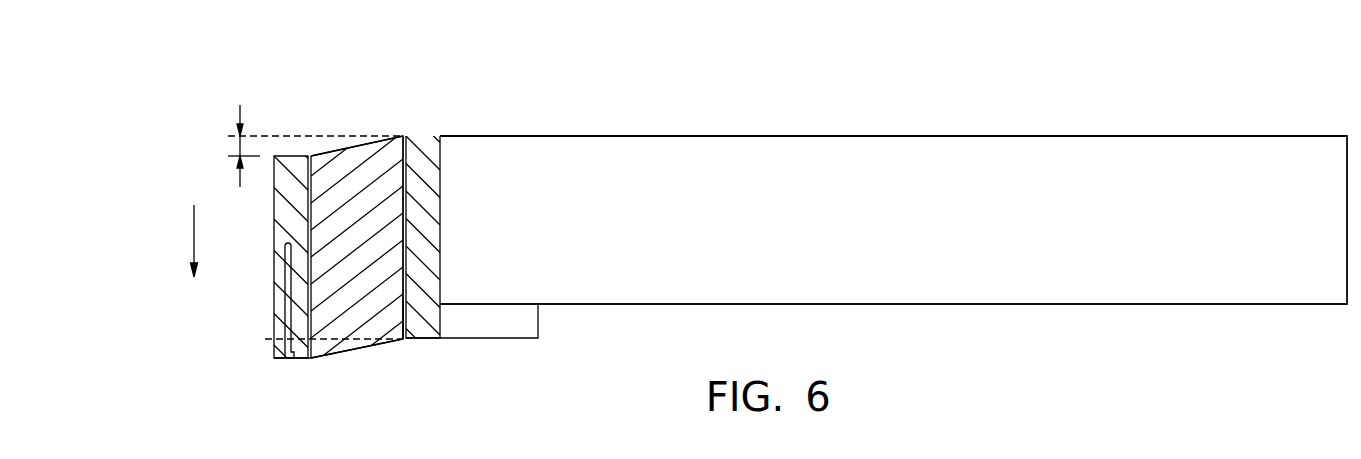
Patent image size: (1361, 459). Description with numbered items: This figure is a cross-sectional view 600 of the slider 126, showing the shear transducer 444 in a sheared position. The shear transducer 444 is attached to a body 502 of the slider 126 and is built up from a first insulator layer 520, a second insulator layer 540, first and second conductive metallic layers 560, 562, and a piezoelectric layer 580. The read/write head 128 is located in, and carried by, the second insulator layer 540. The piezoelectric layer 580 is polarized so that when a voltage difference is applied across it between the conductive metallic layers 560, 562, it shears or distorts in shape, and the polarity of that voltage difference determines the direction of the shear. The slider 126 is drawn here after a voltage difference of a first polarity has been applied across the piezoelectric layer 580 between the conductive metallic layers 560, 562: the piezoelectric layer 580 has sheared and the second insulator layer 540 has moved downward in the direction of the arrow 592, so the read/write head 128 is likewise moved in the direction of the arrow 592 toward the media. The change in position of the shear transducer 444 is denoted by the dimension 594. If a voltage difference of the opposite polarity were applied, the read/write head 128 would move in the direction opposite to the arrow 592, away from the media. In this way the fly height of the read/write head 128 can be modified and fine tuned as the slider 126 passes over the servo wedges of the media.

The slider 126 is at (565, 136).
The read/write head 128 is at (288, 360).
The shear transducer 444 is at (345, 93).
The body 502 is at (815, 239).
The first insulator layer 520 is at (420, 340).
The second insulator layer 540 is at (274, 303).
The first conductive metallic layer 560 is at (312, 359).
The second conductive metallic layer 562 is at (405, 341).
The piezoelectric layer 580 is at (353, 137).
The arrow 592 is at (194, 231).
The dimension 594 is at (228, 147).
The cross-sectional view 600 is at (982, 104).